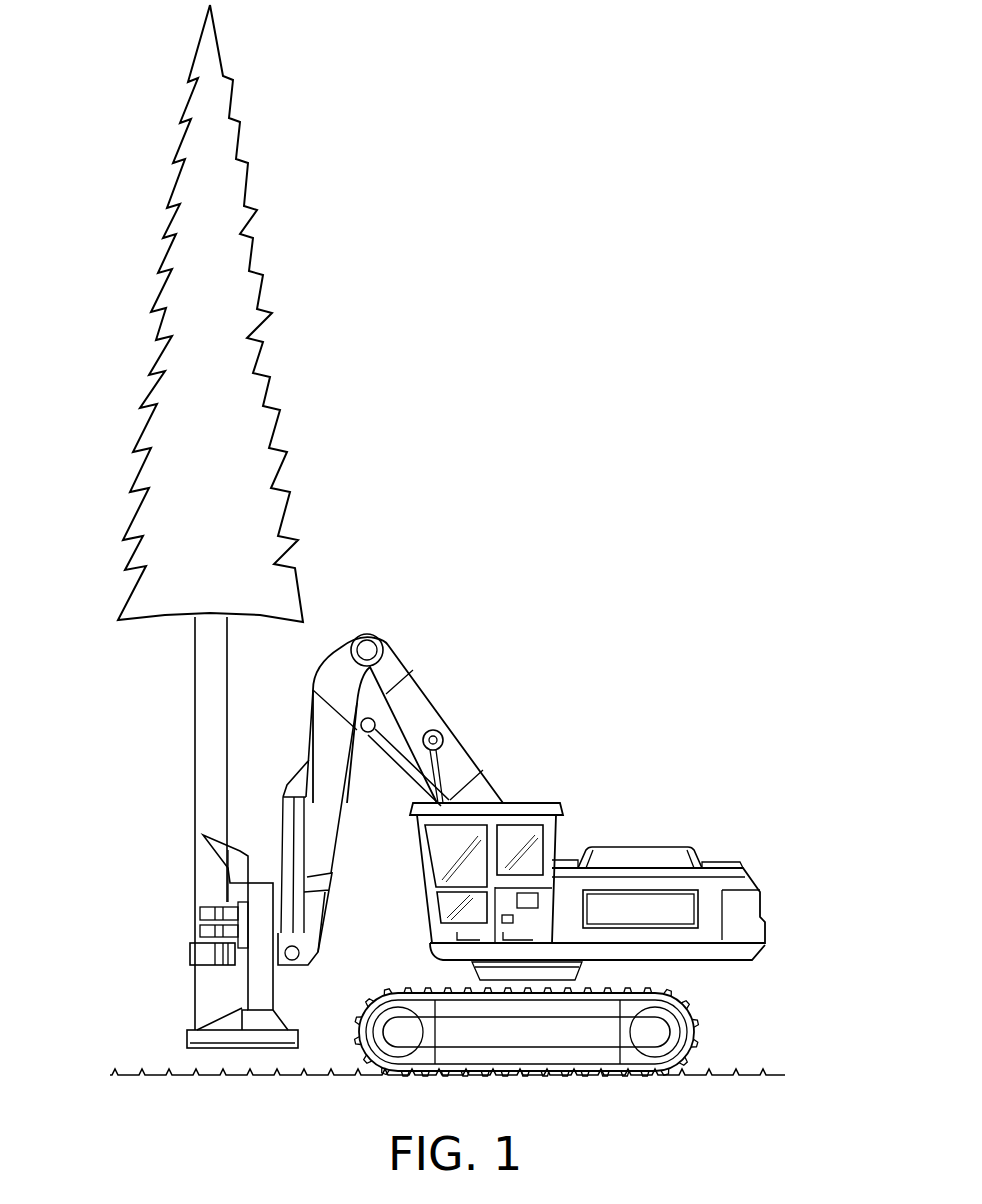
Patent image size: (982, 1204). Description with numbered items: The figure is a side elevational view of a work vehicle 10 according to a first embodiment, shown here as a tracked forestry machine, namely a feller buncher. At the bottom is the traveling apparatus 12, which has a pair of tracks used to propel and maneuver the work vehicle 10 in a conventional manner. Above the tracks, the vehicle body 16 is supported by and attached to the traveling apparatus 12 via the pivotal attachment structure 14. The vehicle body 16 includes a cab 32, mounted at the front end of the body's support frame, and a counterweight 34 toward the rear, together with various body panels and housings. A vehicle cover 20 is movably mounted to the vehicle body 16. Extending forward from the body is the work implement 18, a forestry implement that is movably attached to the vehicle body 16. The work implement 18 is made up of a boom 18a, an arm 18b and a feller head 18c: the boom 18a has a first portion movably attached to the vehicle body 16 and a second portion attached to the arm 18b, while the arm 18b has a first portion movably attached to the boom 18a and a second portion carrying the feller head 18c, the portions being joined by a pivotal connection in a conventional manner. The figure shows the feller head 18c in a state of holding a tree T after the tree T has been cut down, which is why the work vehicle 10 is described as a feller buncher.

The tree T is at (318, 286).
The work vehicle 10 is at (716, 629).
The traveling apparatus 12 is at (710, 1017).
The pivotal attachment structure 14 is at (588, 972).
The vehicle body 16 is at (637, 861).
The work implement 18 is at (115, 705).
The boom 18a is at (415, 754).
The arm 18b is at (302, 720).
The feller head 18c is at (225, 988).
The vehicle cover 20 is at (665, 836).
The cab 32 is at (535, 803).
The counterweight 34 is at (743, 905).